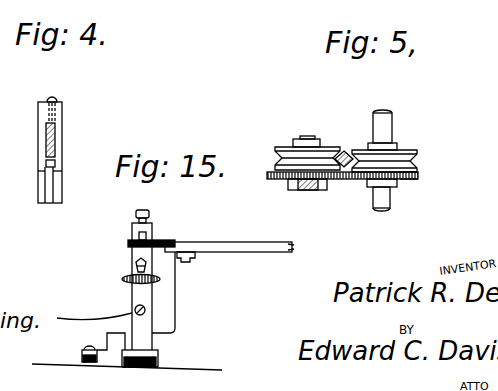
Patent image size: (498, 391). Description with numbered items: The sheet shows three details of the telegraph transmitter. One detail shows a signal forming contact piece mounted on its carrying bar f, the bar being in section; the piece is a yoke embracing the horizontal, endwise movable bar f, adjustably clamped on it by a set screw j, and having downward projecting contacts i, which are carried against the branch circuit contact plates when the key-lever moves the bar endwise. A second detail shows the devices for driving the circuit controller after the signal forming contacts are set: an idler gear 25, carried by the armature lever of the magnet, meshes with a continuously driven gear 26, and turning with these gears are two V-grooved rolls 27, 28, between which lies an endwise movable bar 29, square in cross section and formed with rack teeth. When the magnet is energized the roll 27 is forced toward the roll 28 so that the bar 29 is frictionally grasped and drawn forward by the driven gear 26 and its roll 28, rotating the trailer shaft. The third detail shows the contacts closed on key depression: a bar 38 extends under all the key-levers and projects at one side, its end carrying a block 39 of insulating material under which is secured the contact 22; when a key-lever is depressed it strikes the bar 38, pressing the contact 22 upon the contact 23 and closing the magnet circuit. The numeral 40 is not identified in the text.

In FIG. 4, the set screw j is at (58, 99).
In FIG. 4, the horizontal bar f is at (55, 138).
In FIG. 4, the contact pieces i is at (60, 193).
In FIG. 5, the idler gear 25 is at (277, 180).
In FIG. 5, the continuously driven gear 26 is at (415, 180).
In FIG. 5, the grooved roll 27 is at (281, 147).
In FIG. 5, the grooved roll 28 is at (411, 149).
In FIG. 5, the endwise movable bar 29 is at (343, 150).
In FIG. 15, the insulated contact 22 is at (131, 253).
In FIG. 15, the insulated contact 23 is at (138, 268).
In FIG. 15, the bar 38 is at (238, 247).
In FIG. 15, the block 39 is at (168, 243).
In FIG. 15, the wire 40 is at (71, 318).